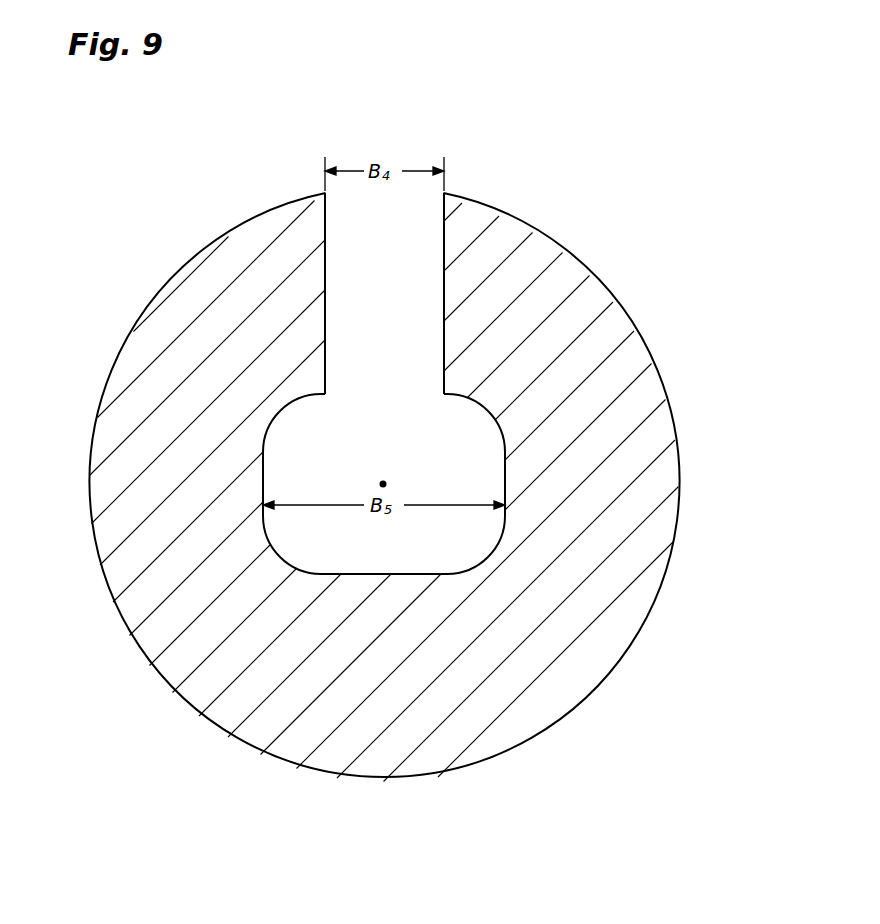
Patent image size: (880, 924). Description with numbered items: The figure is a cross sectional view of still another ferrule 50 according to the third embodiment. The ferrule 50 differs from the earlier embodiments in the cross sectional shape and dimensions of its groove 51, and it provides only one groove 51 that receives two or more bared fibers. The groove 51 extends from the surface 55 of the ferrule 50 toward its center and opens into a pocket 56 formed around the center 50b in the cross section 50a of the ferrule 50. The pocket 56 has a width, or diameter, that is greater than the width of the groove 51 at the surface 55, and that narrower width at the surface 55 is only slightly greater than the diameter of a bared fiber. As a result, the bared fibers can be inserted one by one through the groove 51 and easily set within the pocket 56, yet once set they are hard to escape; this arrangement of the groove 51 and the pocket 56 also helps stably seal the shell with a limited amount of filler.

The ferrule 50 is at (540, 156).
The cross section 50a is at (655, 442).
The center 50b is at (383, 480).
The groove 51 is at (326, 272).
The surface 55 is at (279, 204).
The pocket 56 is at (264, 462).